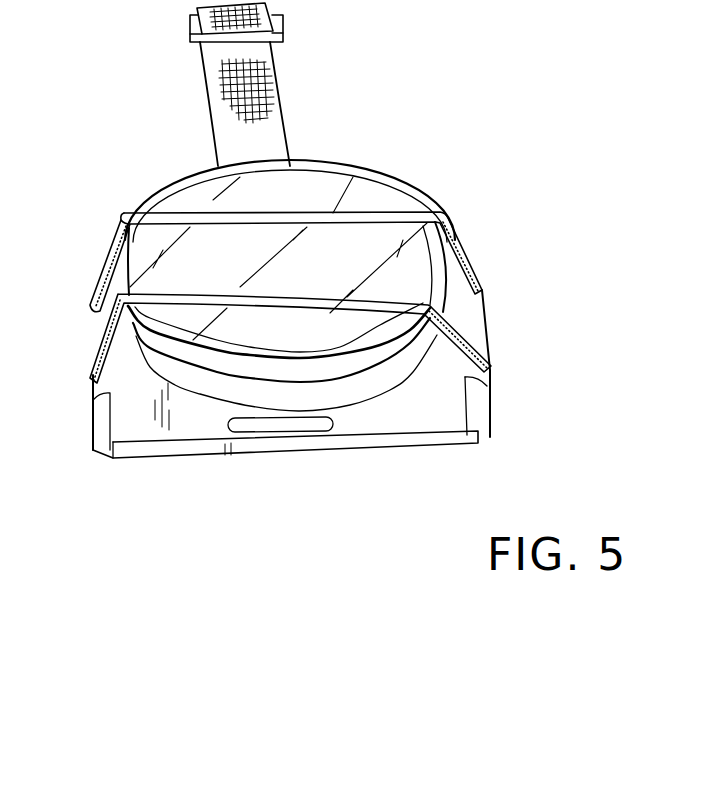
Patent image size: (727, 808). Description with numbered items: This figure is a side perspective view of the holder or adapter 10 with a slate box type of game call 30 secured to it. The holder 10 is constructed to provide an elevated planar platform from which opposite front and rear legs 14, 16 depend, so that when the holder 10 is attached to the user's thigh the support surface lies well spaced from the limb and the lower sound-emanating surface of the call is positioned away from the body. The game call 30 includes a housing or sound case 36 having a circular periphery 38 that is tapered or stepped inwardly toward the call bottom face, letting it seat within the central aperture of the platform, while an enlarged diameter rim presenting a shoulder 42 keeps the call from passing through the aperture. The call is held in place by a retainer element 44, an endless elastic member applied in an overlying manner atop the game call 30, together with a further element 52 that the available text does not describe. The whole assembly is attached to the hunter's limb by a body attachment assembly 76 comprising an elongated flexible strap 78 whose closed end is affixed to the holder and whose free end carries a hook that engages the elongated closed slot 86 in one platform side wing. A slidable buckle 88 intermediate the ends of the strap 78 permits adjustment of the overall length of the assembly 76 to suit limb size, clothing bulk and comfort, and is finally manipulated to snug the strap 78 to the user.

The holder 10 is at (492, 231).
The front leg 14 is at (491, 412).
The rear leg 16 is at (93, 420).
The slate call 30 is at (366, 188).
The sound case 36 is at (375, 375).
The circular periphery 38 is at (171, 368).
The shoulder 42 is at (307, 363).
The retainer element 44 is at (273, 233).
The lower retaining strap 52 is at (333, 300).
The body attachment assembly 76 is at (300, 127).
The strap 78 is at (218, 105).
The closed slot 86 is at (306, 422).
The buckle 88 is at (290, 24).